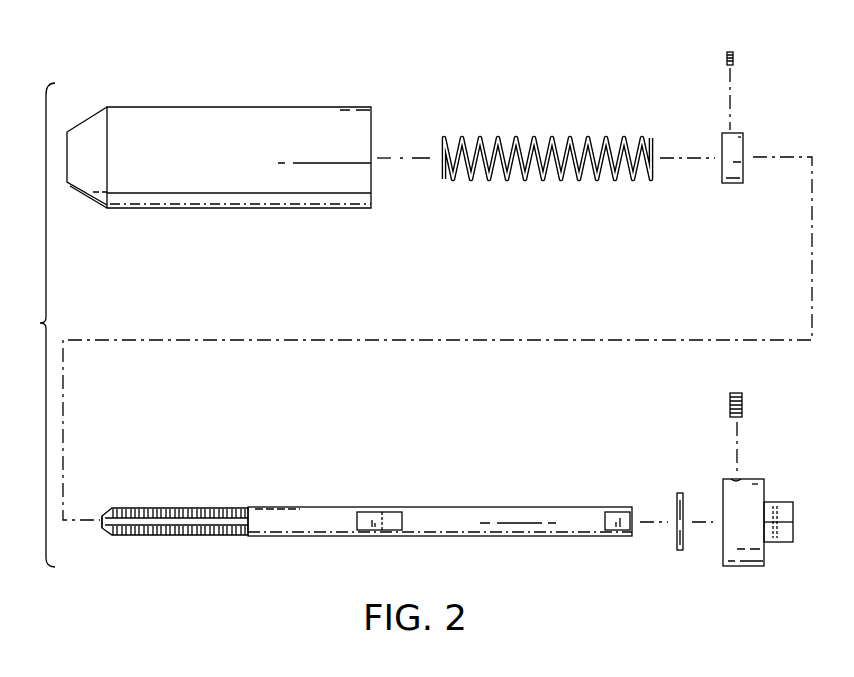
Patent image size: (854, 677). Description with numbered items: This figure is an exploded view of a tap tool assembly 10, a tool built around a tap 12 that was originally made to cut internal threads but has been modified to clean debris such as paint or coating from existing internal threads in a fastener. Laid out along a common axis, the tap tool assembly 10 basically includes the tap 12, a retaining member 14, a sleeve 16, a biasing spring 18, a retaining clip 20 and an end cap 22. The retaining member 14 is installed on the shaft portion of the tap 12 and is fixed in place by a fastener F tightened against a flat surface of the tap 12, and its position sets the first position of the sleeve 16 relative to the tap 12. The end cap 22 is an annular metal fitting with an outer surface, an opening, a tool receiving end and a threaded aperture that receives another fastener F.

The tap tool assembly 10 is at (32, 325).
The tap 12 is at (320, 507).
The retaining member 14 is at (733, 185).
The sleeve 16 is at (224, 107).
The biasing spring 18 is at (540, 137).
The retaining clip 20 is at (690, 497).
The end cap 22 is at (737, 567).
The fastener F is at (735, 52).